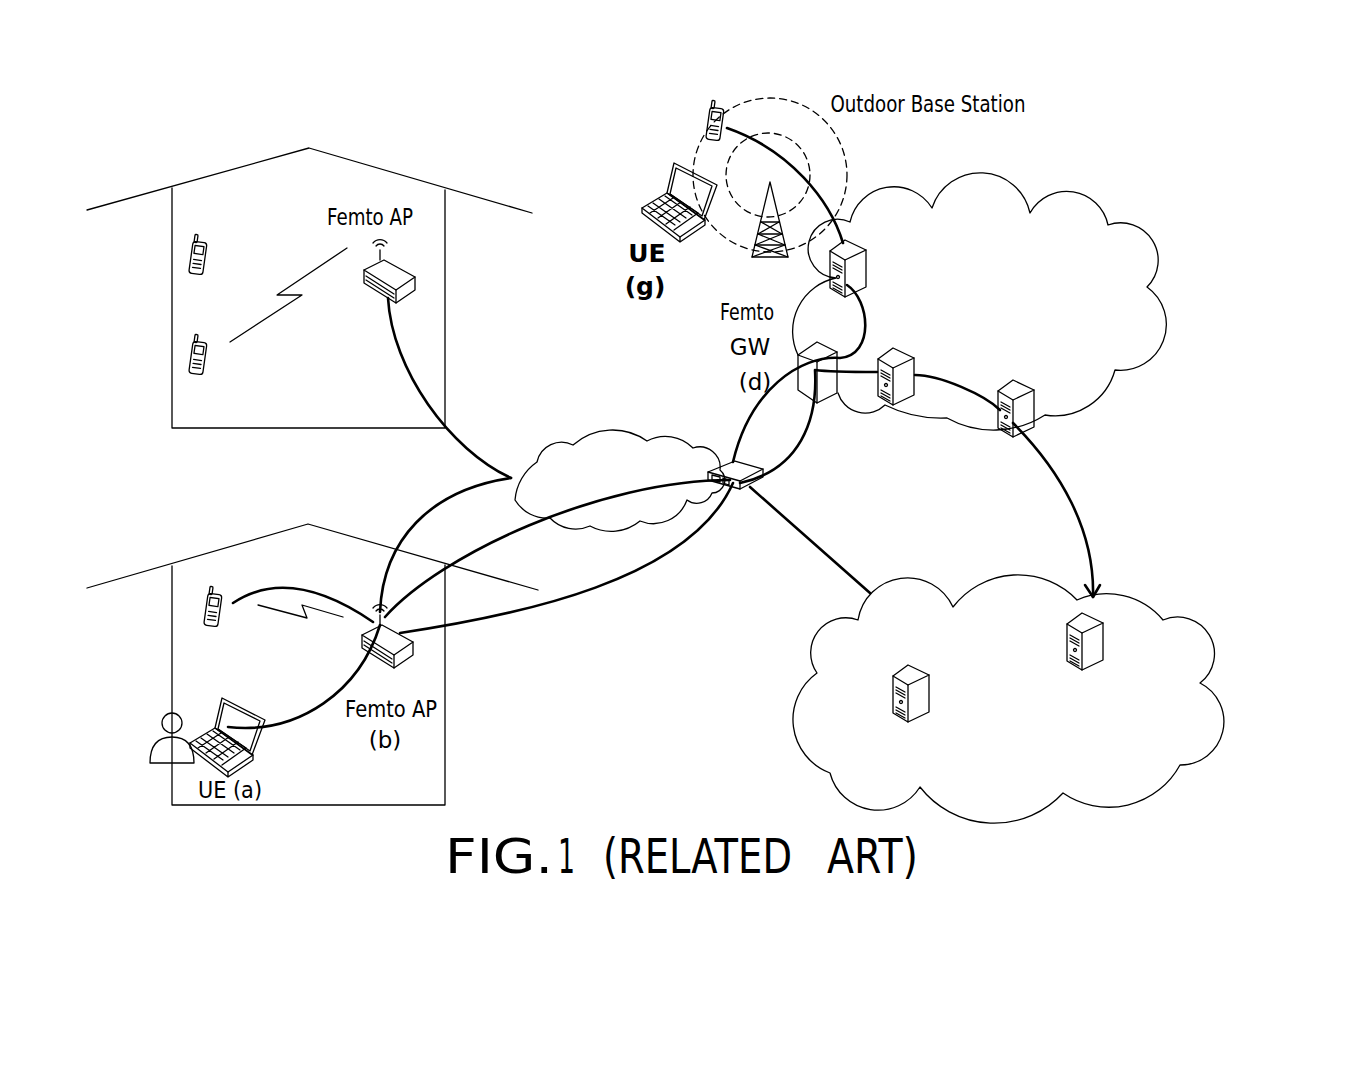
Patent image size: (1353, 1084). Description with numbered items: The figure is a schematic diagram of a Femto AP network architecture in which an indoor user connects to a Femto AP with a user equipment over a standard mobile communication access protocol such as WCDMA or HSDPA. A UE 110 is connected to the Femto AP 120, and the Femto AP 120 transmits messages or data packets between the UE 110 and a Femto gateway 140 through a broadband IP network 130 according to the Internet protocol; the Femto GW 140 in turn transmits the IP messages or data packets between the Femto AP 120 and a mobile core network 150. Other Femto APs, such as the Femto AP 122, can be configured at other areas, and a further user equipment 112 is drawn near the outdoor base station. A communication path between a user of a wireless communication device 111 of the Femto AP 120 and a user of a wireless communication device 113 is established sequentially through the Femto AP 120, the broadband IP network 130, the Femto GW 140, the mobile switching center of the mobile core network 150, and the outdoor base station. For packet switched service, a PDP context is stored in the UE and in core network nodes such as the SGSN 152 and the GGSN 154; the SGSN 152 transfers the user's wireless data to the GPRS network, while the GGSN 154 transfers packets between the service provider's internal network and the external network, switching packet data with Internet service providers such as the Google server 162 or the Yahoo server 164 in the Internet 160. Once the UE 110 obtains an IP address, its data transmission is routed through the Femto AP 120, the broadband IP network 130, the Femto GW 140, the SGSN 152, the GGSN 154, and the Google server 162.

The user equipment 110 is at (257, 700).
The wireless communication device 111 is at (243, 587).
The user equipment (laptop UE (g)) 112 is at (655, 192).
The wireless communication device 113 is at (728, 95).
The Femto AP 120 is at (430, 645).
The Femto AP 122 is at (397, 265).
The broadband IP network 130 is at (620, 430).
The Femto gateway 140 is at (828, 407).
The mobile core network 150 is at (1088, 195).
The serving GPRS support node 152 is at (905, 405).
The gateway GPRS support node 154 is at (998, 438).
The Internet 160 is at (1217, 637).
The Google server 162 is at (1127, 647).
The Yahoo server 164 is at (943, 692).